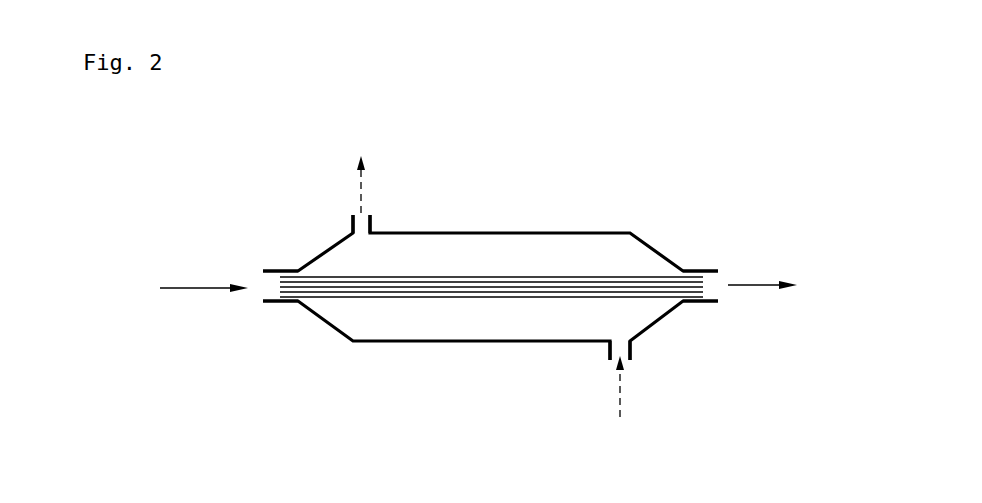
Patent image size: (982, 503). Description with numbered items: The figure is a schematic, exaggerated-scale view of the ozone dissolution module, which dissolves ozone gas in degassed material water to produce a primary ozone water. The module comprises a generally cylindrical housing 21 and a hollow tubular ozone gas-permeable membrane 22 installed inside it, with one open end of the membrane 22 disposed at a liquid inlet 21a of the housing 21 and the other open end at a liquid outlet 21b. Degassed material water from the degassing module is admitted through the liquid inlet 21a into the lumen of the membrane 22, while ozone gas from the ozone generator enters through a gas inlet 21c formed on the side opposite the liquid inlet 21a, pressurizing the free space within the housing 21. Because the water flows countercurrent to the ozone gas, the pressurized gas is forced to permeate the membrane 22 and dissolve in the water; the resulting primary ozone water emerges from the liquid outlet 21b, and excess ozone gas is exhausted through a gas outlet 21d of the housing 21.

The housing 21 is at (558, 233).
The liquid inlet 21a is at (277, 271).
The liquid outlet 21b is at (710, 270).
The gas inlet 21c is at (632, 348).
The gas outlet 21d is at (372, 220).
The ozone gas-permeable membrane 22 is at (450, 297).